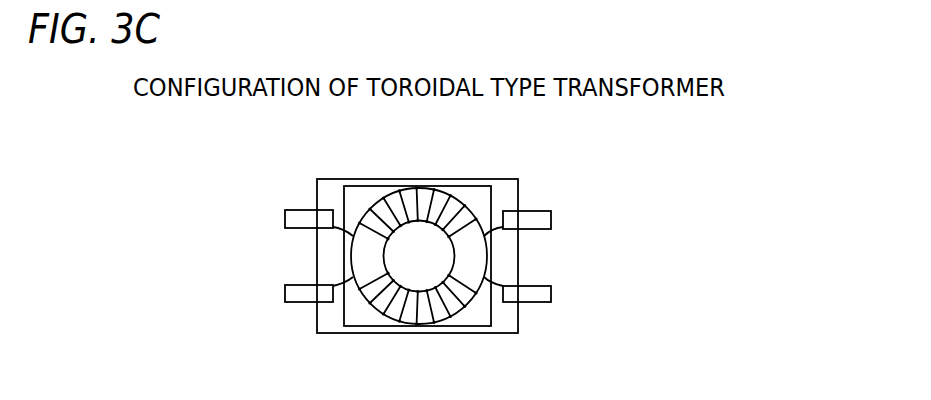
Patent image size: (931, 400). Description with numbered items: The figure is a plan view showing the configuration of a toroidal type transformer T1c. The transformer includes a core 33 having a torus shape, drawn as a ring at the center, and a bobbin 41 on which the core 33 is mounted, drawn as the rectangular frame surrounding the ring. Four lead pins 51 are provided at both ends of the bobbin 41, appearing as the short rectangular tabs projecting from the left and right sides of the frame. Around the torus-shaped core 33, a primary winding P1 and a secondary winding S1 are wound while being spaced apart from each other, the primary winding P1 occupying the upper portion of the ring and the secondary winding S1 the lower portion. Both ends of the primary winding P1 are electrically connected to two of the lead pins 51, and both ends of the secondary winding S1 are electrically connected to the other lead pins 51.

The toroidal type transformer T1c is at (427, 255).
The bobbin 41 is at (507, 257).
The core 33 is at (363, 257).
The lead pins 51 is at (297, 218).
The primary winding P1 is at (418, 188).
The secondary winding S1 is at (418, 324).